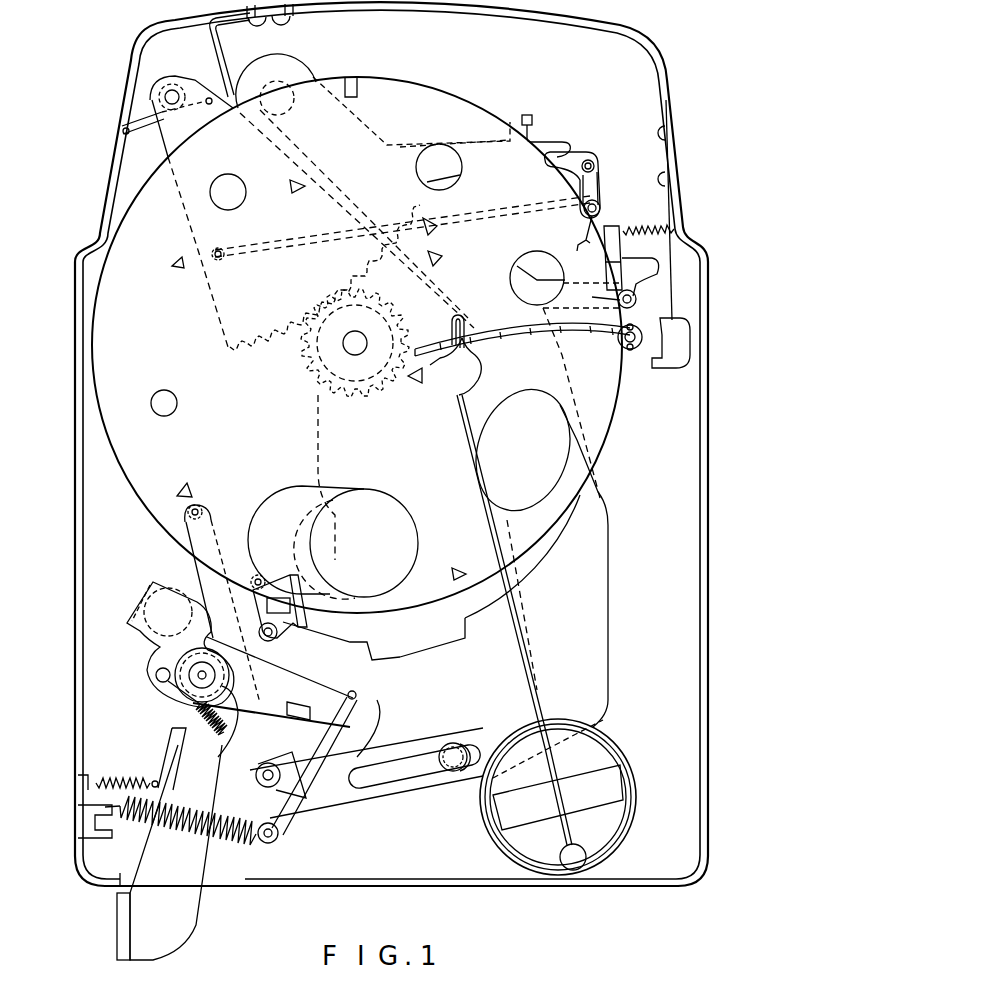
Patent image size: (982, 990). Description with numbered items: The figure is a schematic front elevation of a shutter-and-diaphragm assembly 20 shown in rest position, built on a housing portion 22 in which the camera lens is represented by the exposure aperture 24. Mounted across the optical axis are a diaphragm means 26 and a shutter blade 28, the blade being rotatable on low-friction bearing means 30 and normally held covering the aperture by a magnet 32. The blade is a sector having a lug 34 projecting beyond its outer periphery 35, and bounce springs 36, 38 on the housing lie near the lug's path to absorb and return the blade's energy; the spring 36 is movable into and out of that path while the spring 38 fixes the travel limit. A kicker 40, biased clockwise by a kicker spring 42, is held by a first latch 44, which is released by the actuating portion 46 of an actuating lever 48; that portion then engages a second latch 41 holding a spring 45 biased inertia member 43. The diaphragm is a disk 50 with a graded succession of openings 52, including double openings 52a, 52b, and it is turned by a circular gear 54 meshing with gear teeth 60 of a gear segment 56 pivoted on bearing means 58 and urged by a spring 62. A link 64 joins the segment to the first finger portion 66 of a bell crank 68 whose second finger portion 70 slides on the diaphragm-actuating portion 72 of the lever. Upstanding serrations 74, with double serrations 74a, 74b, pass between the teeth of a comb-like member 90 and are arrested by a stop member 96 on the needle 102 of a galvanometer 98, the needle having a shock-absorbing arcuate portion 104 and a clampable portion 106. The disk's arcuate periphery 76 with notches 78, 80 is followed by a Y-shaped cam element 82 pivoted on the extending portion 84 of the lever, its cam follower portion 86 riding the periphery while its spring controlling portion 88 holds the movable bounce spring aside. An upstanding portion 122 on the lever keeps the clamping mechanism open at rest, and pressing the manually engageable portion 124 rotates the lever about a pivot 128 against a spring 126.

The shutter-and-diaphragm assembly 20 is at (160, 533).
The housing portion 22 is at (75, 288).
The exposure aperture 24 is at (338, 500).
The diaphragm means 26 is at (142, 455).
The shutter blade 28 is at (490, 603).
The bearing means 30 is at (343, 345).
The magnet 32 is at (285, 623).
The lug 34 is at (424, 648).
The outer periphery 35 is at (347, 642).
The bounce spring 36 is at (670, 368).
The bounce spring 38 is at (224, 70).
The kicker 40 is at (356, 694).
The second latch 41 is at (197, 566).
The kicker spring 42 is at (262, 842).
The inertia member 43 is at (148, 614).
The first latch 44 is at (290, 682).
The spring 45 is at (196, 712).
The actuating portion 46 is at (176, 742).
The actuating lever 48 is at (333, 788).
The disk 50 is at (112, 347).
The openings 52 is at (245, 172).
The special opening 52a is at (283, 495).
The special opening 52b is at (515, 412).
The circular gear 54 is at (318, 393).
The gear segment 56 is at (218, 312).
The bearing means 58 is at (172, 85).
The gear teeth 60 is at (262, 352).
The spring 62 is at (136, 130).
The link 64 is at (298, 245).
The first finger portion 66 is at (600, 185).
The bell crank 68 is at (601, 166).
The second finger portion 70 is at (574, 160).
The diaphragm-actuating portion 72 is at (558, 146).
The serrations 74 is at (290, 184).
The double serrations 74a is at (415, 380).
The double serrations 74b is at (434, 262).
The arcuate periphery 76 is at (452, 96).
The notch 78 is at (578, 243).
The notch 80 is at (353, 76).
The cam element 82 is at (652, 266).
The extending portion 84 is at (634, 302).
The cam follower portion 86 is at (616, 232).
The spring controlling portion 88 is at (642, 232).
The comb-like member 90 is at (586, 330).
The stop member 96 is at (462, 352).
The galvanometer 98 is at (593, 766).
The needle 102 is at (510, 577).
The arcuate portion 104 is at (480, 352).
The clampable portion 106 is at (464, 330).
The upstanding portion 122 is at (530, 100).
The manually engageable portion 124 is at (196, 935).
The spring 126 is at (122, 776).
The pivot 128 is at (280, 90).